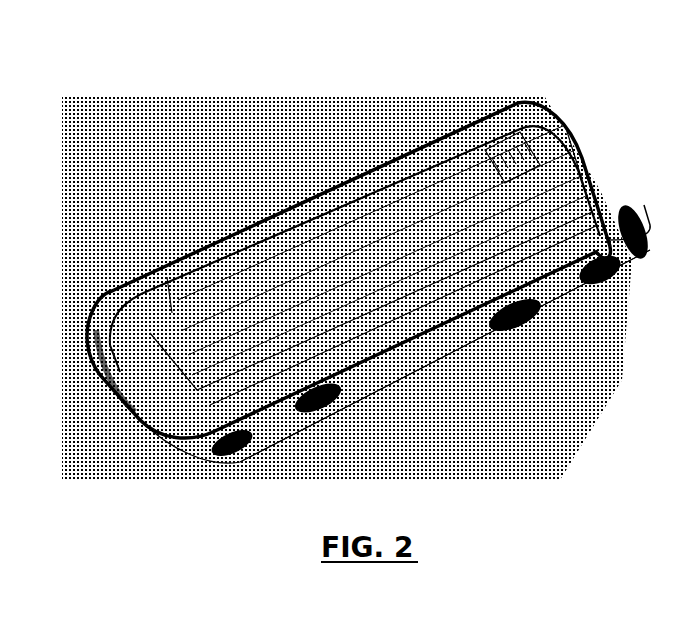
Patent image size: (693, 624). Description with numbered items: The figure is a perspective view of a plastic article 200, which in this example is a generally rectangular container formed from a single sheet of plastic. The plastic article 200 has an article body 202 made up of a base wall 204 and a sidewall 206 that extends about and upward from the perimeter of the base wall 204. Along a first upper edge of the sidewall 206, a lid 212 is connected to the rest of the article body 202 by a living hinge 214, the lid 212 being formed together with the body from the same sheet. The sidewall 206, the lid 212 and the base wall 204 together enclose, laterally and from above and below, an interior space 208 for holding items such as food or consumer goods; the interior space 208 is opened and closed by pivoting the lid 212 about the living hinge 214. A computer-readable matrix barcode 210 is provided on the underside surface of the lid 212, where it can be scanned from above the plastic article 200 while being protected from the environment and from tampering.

The plastic article 200 is at (147, 131).
The article body 202 is at (487, 335).
The base wall 204 is at (562, 323).
The sidewall 206 is at (138, 407).
The interior space 208 is at (358, 322).
The computer-readable matrix barcode 210 is at (500, 148).
The lid 212 is at (201, 298).
The living hinge 214 is at (302, 200).